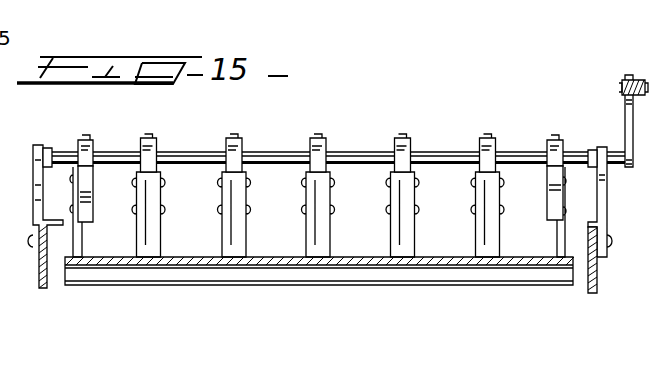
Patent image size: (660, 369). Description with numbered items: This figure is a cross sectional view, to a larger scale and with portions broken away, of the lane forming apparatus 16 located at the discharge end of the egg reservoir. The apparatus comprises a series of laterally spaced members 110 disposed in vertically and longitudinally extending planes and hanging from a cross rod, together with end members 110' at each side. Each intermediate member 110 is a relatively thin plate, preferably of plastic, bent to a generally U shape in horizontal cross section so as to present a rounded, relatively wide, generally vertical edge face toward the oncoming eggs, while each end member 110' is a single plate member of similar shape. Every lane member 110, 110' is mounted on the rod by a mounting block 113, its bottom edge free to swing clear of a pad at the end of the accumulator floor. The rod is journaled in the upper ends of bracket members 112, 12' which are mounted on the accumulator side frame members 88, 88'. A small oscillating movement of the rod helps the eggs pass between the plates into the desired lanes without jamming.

The lane forming apparatus 16 is at (517, 140).
The laterally spaced members 110 is at (318, 214).
The end members 110' is at (332, 184).
The mounting block 113 is at (93, 145).
The bracket member 112 is at (607, 188).
The left support bar 12' is at (31, 216).
The accumulator side frame member 88 is at (611, 260).
The left lower member 88' is at (23, 257).